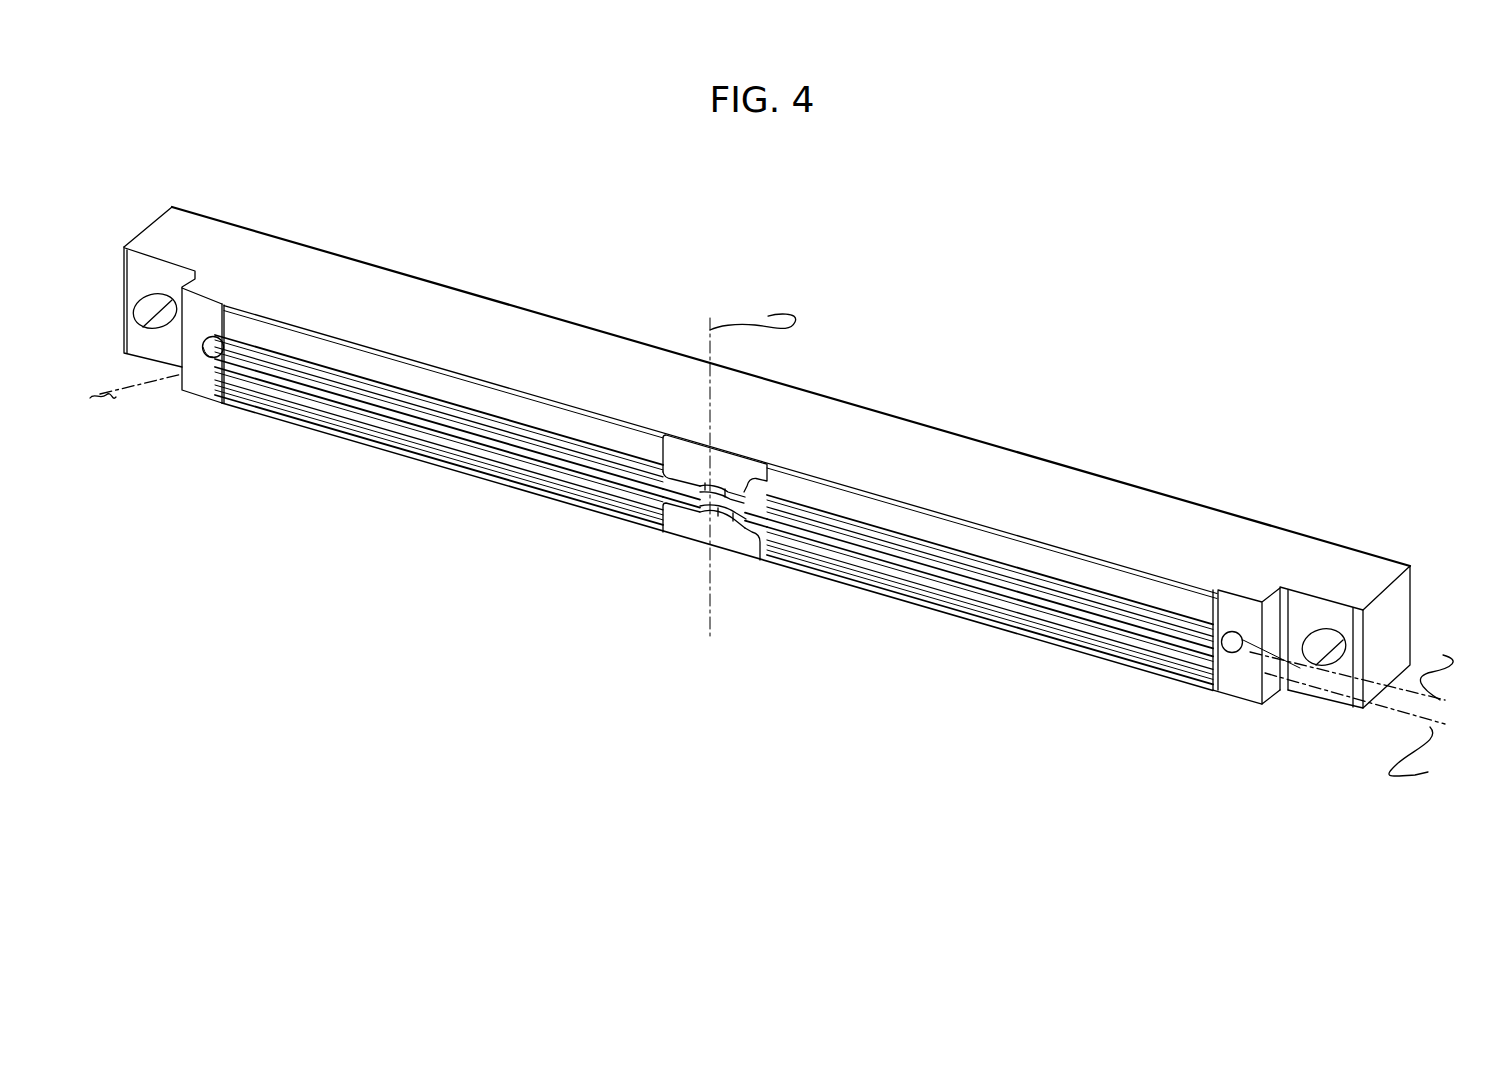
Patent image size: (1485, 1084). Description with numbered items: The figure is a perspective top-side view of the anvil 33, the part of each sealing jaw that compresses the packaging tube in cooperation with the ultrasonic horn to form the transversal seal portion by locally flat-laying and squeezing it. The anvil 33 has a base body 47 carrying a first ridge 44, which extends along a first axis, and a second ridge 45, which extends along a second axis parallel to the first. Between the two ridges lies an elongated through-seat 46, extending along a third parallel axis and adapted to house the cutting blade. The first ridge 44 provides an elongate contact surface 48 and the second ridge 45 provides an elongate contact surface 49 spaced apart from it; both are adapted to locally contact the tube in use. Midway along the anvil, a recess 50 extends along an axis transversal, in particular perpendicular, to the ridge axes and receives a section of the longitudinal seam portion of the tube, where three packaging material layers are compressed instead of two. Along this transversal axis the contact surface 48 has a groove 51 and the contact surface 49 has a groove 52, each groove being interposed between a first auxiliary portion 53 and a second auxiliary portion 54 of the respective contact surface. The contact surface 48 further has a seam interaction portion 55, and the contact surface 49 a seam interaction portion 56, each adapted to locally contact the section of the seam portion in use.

The anvil 33 is at (1118, 398).
The first ridge 44 is at (228, 322).
The second ridge 45 is at (228, 398).
The elongated through-seat 46 is at (1222, 653).
The base body 47 is at (1337, 556).
The elongate contact surface 48 is at (602, 448).
The elongate contact surface 49 is at (610, 492).
The recess 50 is at (702, 550).
The groove 51 is at (721, 466).
The groove 52 is at (699, 518).
The first auxiliary portion 53 is at (438, 411).
The second auxiliary portion 54 is at (905, 547).
The seam interaction portion 55 is at (741, 481).
The seam interaction portion 56 is at (736, 535).